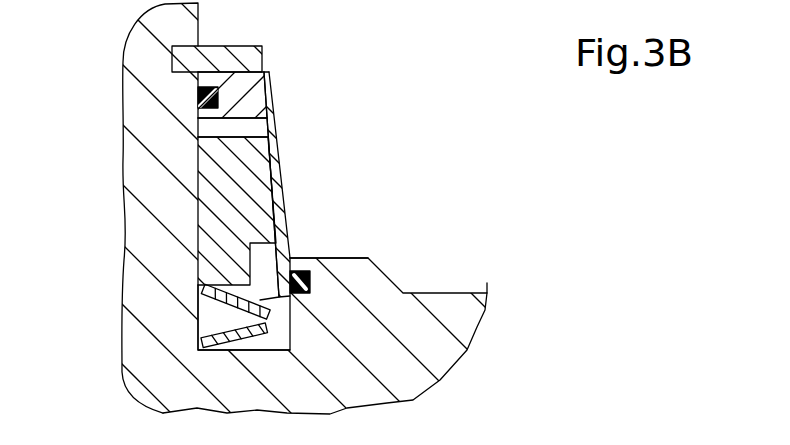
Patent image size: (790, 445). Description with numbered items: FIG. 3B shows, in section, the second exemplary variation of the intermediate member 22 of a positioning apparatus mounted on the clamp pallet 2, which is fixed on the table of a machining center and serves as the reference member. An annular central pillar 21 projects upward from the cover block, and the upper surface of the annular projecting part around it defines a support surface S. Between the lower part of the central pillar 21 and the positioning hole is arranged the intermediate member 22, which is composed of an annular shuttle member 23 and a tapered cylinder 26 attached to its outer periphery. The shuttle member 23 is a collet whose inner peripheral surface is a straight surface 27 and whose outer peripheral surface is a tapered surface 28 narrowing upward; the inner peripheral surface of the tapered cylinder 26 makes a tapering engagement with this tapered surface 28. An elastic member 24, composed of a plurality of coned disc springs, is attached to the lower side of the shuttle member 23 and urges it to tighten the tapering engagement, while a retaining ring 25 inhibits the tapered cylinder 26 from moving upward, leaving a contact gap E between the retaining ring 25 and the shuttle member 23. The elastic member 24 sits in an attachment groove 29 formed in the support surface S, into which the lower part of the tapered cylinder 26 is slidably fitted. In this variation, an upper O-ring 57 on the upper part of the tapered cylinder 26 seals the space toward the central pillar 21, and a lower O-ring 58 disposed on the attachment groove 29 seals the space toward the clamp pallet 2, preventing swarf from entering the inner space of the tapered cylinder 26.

The clamp pallet 2 is at (460, 335).
The central pillar 21 is at (142, 250).
The intermediate member 22 is at (302, 222).
The shuttle member 23 is at (280, 171).
The elastic member 24 is at (200, 318).
The retaining ring 25 is at (173, 55).
The tapered cylinder 26 is at (285, 205).
The straight surface 27 is at (200, 170).
The tapered surface 28 is at (274, 171).
The attachment groove 29 is at (283, 334).
The upper O-ring 57 is at (197, 97).
The lower O-ring 58 is at (300, 270).
The contact gap E is at (197, 133).
The support surface S is at (353, 258).